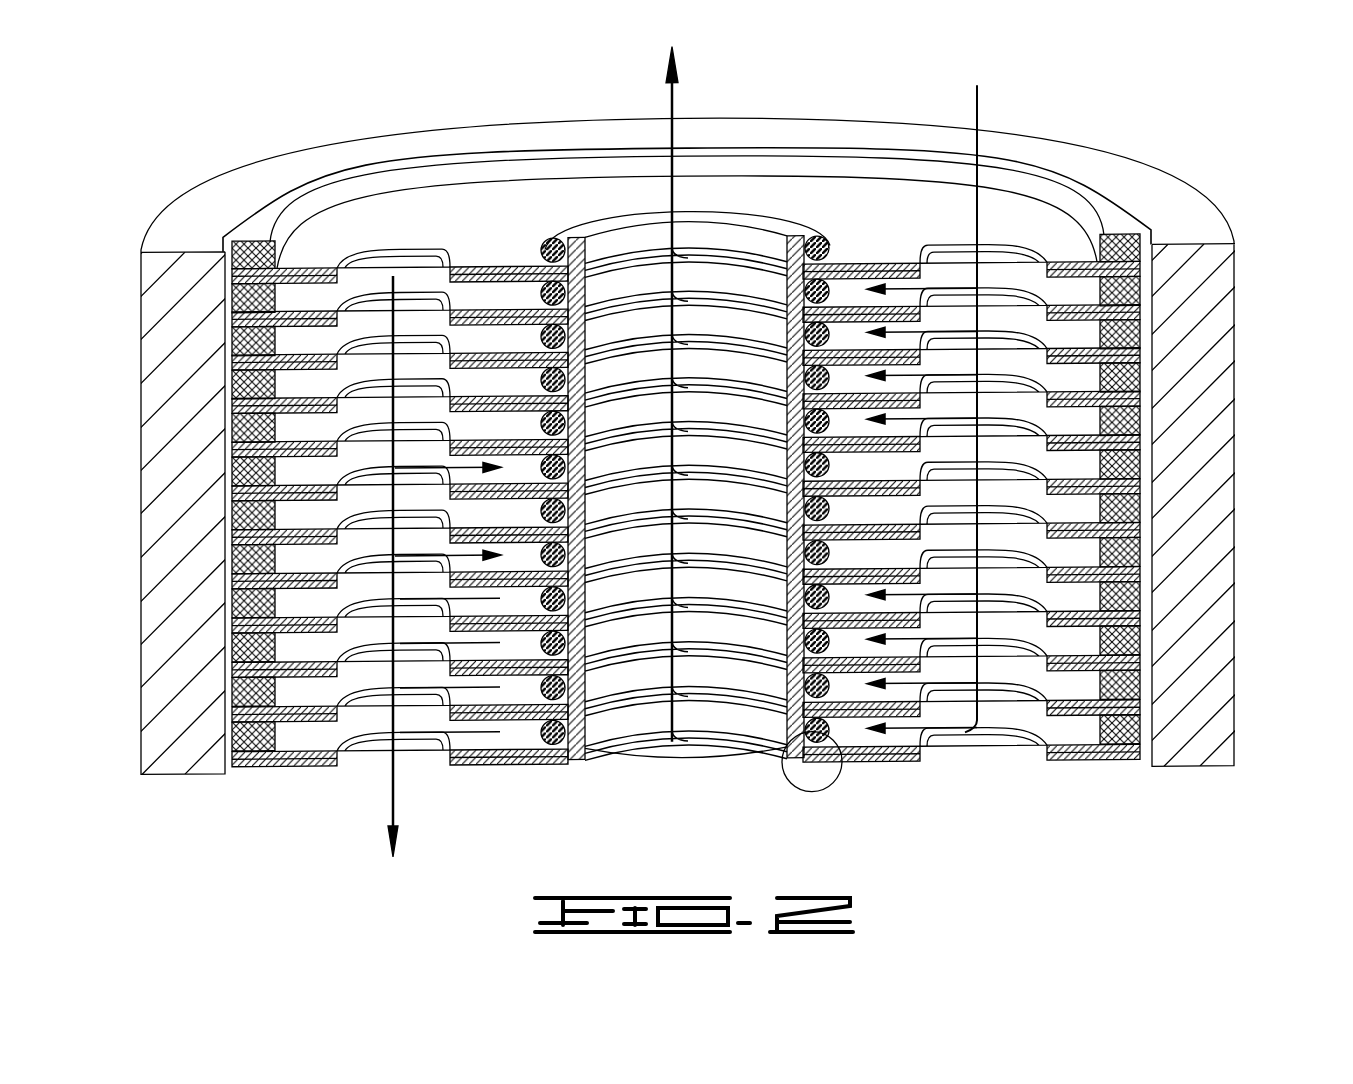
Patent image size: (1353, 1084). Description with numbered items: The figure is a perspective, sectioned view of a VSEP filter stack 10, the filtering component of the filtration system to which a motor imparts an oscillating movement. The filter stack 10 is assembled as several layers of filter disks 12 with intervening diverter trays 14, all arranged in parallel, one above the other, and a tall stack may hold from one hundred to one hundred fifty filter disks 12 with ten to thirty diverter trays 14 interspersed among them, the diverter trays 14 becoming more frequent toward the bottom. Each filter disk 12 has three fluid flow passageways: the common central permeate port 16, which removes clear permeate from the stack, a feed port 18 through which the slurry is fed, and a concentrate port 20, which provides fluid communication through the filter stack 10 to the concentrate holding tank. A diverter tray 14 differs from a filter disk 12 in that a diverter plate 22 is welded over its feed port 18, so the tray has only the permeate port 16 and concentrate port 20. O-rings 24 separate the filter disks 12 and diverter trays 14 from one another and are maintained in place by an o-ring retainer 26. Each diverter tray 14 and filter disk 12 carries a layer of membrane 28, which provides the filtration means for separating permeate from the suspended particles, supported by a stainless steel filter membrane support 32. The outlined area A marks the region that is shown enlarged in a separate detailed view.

The filter stack 10 is at (1237, 565).
The filter disk 12 is at (240, 682).
The diverter tray 14 is at (695, 470).
The permeate port 16 is at (632, 242).
The feed port 18 is at (998, 240).
The concentrate port 20 is at (374, 765).
The diverter plate 22 is at (373, 562).
The o-ring 24 is at (818, 243).
The o-ring retainer 26 is at (745, 217).
The membrane 28 is at (1060, 245).
The stainless steel filter membrane support 32 is at (1142, 291).
The area A is at (830, 793).